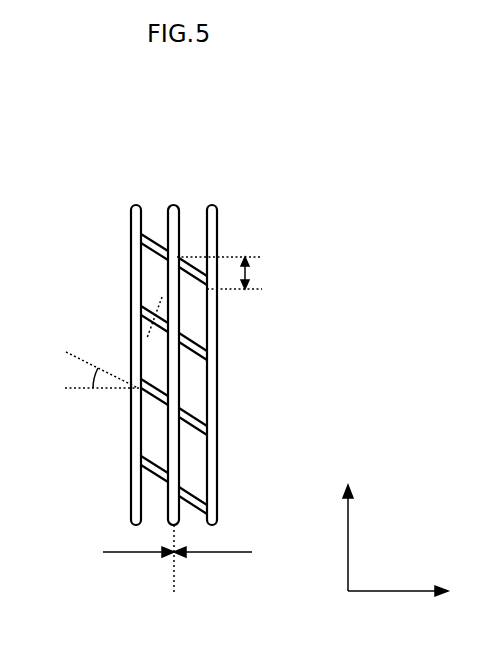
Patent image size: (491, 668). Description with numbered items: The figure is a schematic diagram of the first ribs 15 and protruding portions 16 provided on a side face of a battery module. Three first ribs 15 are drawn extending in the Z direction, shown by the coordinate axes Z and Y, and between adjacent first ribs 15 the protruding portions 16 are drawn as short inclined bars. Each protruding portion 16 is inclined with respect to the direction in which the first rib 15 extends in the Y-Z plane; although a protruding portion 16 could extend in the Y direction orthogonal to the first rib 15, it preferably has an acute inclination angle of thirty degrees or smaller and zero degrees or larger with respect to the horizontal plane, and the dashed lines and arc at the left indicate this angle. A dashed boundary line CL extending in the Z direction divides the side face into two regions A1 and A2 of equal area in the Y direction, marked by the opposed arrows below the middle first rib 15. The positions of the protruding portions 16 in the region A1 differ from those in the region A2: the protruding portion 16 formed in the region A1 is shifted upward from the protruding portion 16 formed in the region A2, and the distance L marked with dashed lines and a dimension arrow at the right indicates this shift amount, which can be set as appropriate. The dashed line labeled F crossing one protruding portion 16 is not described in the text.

The first rib 15 is at (131, 217).
The protruding portion 16 is at (155, 243).
The distance L is at (226, 273).
The force direction F is at (155, 319).
The boundary line CL is at (175, 575).
The region A1 is at (138, 567).
The region A2 is at (213, 567).
The Z direction Z is at (359, 538).
The Y direction Y is at (398, 606).